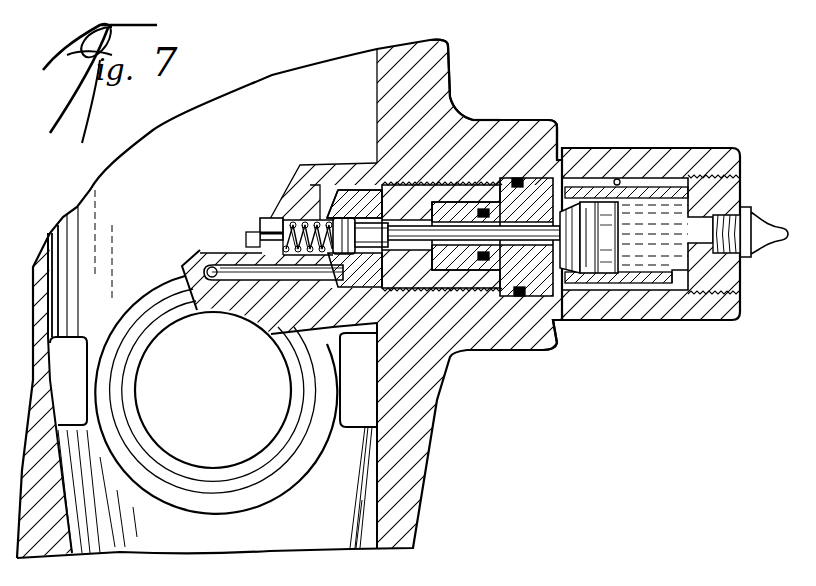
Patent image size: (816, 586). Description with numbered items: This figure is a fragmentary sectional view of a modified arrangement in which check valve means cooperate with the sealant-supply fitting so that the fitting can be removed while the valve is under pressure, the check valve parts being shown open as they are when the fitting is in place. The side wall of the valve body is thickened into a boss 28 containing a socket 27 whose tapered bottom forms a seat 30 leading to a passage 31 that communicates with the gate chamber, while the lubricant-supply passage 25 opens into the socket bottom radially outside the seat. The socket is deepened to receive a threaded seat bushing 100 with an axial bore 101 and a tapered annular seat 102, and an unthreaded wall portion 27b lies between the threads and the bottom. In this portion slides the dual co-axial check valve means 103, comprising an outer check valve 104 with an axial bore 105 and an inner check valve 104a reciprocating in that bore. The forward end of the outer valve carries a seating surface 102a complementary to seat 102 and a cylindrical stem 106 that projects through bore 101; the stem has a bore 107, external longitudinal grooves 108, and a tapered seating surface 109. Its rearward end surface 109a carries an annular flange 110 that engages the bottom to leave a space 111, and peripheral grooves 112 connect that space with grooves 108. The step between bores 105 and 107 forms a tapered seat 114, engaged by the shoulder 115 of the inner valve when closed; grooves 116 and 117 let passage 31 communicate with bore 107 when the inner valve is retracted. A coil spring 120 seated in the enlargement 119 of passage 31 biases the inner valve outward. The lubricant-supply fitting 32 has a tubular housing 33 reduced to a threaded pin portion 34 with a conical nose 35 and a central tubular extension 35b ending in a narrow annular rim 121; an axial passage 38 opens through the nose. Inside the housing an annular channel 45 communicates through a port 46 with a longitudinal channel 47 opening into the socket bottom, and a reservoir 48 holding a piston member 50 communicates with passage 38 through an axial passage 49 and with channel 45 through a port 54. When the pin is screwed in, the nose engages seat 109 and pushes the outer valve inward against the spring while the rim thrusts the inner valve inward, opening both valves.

The lubricant-supply passage 25 is at (250, 268).
The socket 27 is at (518, 177).
The unthreaded wall portion 27b is at (325, 188).
The boss 28 is at (541, 119).
The tapered seat 30 is at (345, 218).
The passage 31 is at (259, 232).
The lubricant-supply fitting 32 is at (701, 139).
The tubular housing 33 is at (646, 153).
The pin portion 34 is at (460, 198).
The conical nose 35 is at (462, 284).
The tubular extension 35b is at (461, 181).
The axial passage 38 is at (442, 244).
The annular channel 45 is at (617, 179).
The port 46 is at (510, 266).
The longitudinal channel 47 is at (562, 317).
The reservoir 48 is at (624, 272).
The axial passage 49 is at (559, 135).
The piston member 50 is at (603, 202).
The port 54 is at (680, 270).
The seat bushing 100 is at (481, 120).
The axial bore 101 is at (451, 108).
The tapered annular seat 102 is at (452, 90).
The annular seating surface 102a is at (455, 66).
The dual co-axial check valve means 103 is at (360, 189).
The outer check valve 104 is at (333, 216).
The inner check valve 104a is at (320, 194).
The axial bore 105 is at (333, 214).
The cylindrical stem 106 is at (400, 280).
The bore 107 is at (385, 286).
The longitudinal grooves 108 is at (426, 273).
The seating surface 109 is at (478, 293).
The end surface 109a is at (284, 345).
The annular flange 110 is at (335, 222).
The space 111 is at (340, 217).
The longitudinal grooves 112 is at (335, 217).
The internal annular shoulder 114 is at (345, 257).
The annular shoulder 115 is at (272, 321).
The longitudinal grooves 116 is at (232, 309).
The longitudinal grooves 117 is at (376, 258).
The enlarged end portion 119 is at (283, 224).
The coil spring 120 is at (288, 222).
The annular rim 121 is at (378, 318).